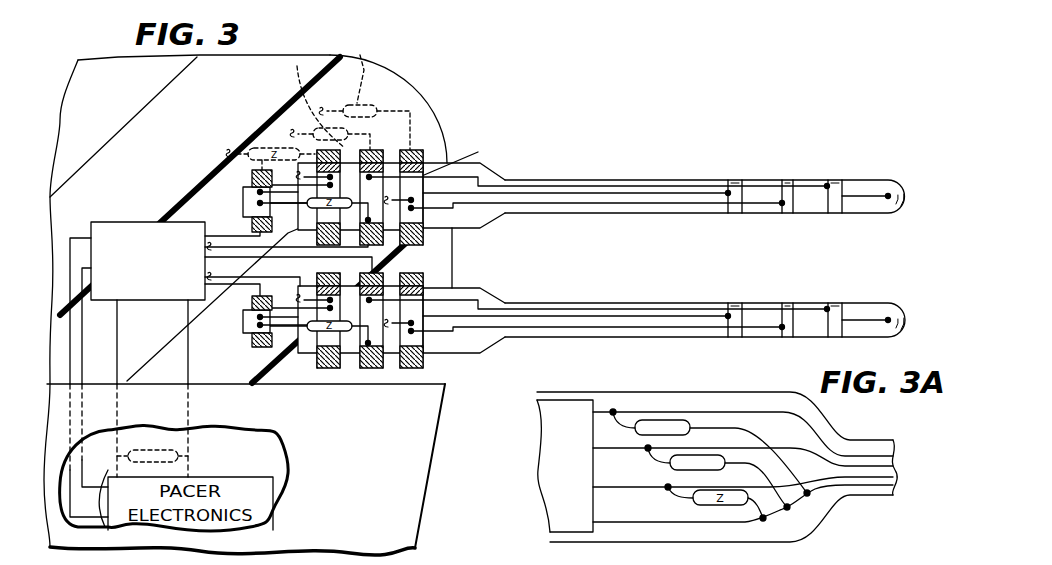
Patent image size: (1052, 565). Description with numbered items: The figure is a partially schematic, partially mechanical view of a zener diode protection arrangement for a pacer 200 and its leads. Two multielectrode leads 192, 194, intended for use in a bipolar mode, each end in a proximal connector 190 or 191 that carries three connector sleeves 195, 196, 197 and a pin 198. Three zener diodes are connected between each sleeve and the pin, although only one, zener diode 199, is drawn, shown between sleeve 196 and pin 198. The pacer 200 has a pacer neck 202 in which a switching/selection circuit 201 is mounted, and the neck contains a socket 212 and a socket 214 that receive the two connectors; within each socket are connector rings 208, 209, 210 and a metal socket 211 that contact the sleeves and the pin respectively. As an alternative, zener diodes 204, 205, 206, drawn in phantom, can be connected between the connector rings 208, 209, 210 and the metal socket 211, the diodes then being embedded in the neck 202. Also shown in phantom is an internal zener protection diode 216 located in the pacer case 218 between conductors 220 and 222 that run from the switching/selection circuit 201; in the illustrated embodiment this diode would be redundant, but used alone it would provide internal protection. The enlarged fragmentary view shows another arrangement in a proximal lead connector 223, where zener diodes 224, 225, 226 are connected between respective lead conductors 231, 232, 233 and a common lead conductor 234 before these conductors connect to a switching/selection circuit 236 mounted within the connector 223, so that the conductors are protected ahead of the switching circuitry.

In FIG. 3, the proximal connector 190 is at (486, 226).
In FIG. 3, the proximal connector 191 is at (487, 348).
In FIG. 3, the lead 192 is at (688, 176).
In FIG. 3, the lead 194 is at (687, 305).
In FIG. 3, the connector sleeve 195 is at (488, 215).
In FIG. 3, the connector sleeve 196 is at (481, 177).
In FIG. 3, the connector sleeve 197 is at (320, 261).
In FIG. 3, the pin 198 is at (238, 190).
In FIG. 3, the zener diode 199 is at (254, 220).
In FIG. 3, the pacer 200 is at (117, 54).
In FIG. 3, the switching/selection circuit 201 is at (118, 222).
In FIG. 3, the pacer neck 202 is at (375, 80).
In FIG. 3, the zener diode 204 is at (343, 69).
In FIG. 3, the zener diode 205 is at (298, 100).
In FIG. 3, the zener diode 206 is at (276, 132).
In FIG. 3, the connector ring 208 is at (428, 150).
In FIG. 3, the connector ring 209 is at (378, 150).
In FIG. 3, the connector ring 210 is at (300, 114).
In FIG. 3, the metal socket 211 is at (243, 196).
In FIG. 3, the socket 212 is at (452, 240).
In FIG. 3, the socket 214 is at (440, 348).
In FIG. 3, the internal zener protection diode 216 is at (160, 446).
In FIG. 3, the pacer case 218 is at (430, 512).
In FIG. 3, the conductor 220 is at (174, 490).
In FIG. 3, the conductor 222 is at (196, 467).
In FIG. 3A, the proximal lead connector 223 is at (713, 393).
In FIG. 3A, the zener diode 224 is at (676, 421).
In FIG. 3A, the zener diode 225 is at (670, 466).
In FIG. 3A, the zener diode 226 is at (760, 540).
In FIG. 3A, the lead conductor 231 is at (858, 443).
In FIG. 3A, the lead conductor 232 is at (886, 457).
In FIG. 3A, the lead conductor 233 is at (878, 478).
In FIG. 3A, the lead conductor 234 is at (857, 487).
In FIG. 3A, the switching/selection circuit 236 is at (588, 444).